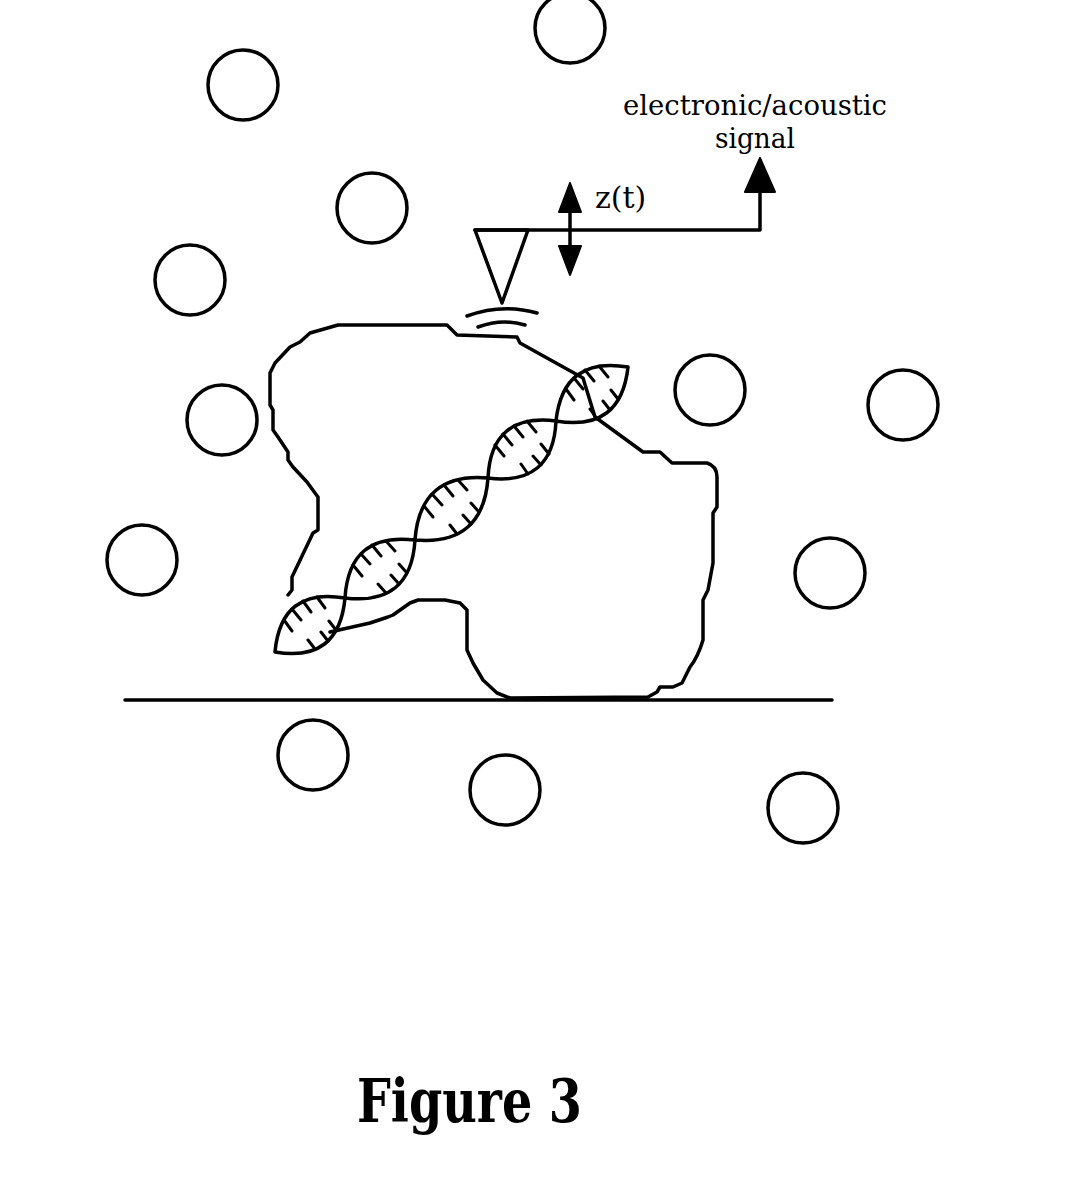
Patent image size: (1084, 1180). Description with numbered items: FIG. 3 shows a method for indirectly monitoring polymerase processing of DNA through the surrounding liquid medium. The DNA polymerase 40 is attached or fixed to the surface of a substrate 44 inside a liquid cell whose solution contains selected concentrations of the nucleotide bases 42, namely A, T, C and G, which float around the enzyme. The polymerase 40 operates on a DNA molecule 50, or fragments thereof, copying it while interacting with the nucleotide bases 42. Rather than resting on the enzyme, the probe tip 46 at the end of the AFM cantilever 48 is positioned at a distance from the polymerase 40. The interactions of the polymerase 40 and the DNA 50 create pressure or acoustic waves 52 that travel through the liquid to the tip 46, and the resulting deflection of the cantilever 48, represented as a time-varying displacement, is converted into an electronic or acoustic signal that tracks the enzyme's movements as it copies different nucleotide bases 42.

The DNA polymerase 40 is at (668, 647).
The nucleotide bases 42 is at (207, 87).
The substrate 44 is at (218, 703).
The tip 46 is at (495, 240).
The cantilever 48 is at (678, 230).
The DNA molecule 50 is at (343, 583).
The acoustic waves 52 is at (537, 313).